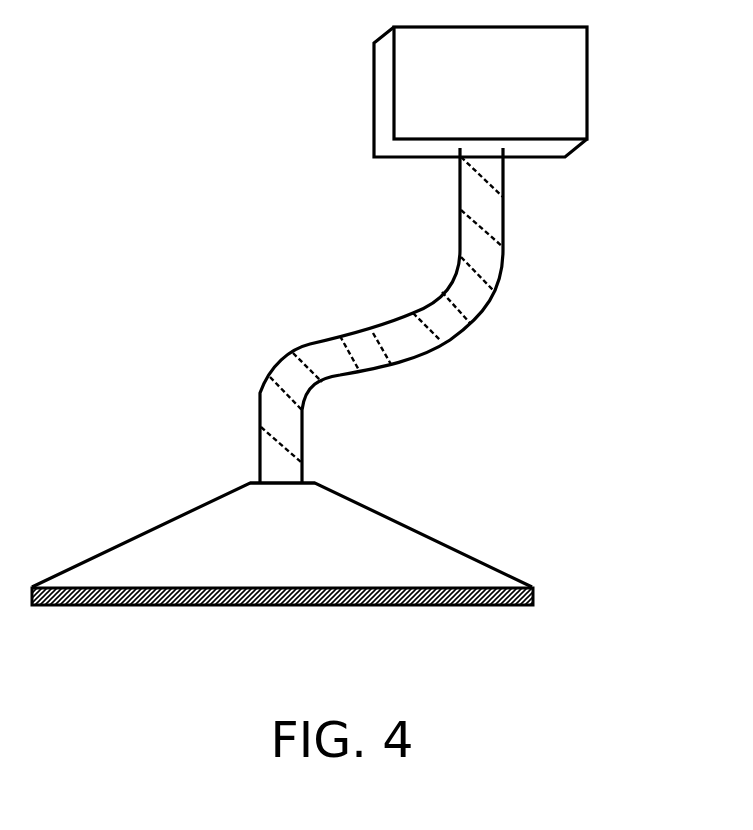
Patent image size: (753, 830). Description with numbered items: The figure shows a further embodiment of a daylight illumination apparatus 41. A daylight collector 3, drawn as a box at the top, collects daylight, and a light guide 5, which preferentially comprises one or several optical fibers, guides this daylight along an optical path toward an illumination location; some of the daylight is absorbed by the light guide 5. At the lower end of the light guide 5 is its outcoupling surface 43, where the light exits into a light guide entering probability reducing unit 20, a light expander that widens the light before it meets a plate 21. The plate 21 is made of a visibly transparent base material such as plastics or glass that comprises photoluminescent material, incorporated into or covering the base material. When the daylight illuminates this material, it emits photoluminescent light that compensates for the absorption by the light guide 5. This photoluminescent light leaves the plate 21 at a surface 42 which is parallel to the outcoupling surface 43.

The daylight collector 3 is at (584, 90).
The light guide 5 is at (303, 410).
The light guide entering probability reducing unit 20 is at (410, 527).
The plate 21 is at (534, 588).
The daylight illumination apparatus 41 is at (470, 254).
The surface 42 is at (328, 589).
The outcoupling surface 43 is at (270, 490).